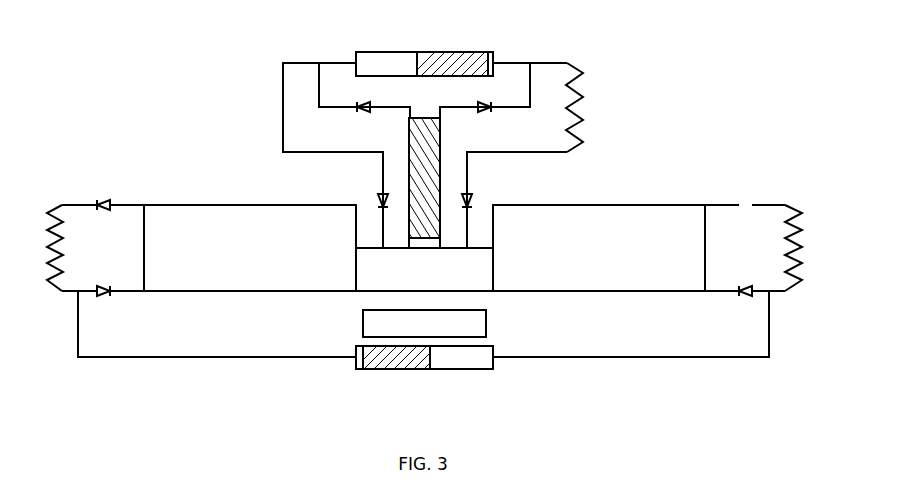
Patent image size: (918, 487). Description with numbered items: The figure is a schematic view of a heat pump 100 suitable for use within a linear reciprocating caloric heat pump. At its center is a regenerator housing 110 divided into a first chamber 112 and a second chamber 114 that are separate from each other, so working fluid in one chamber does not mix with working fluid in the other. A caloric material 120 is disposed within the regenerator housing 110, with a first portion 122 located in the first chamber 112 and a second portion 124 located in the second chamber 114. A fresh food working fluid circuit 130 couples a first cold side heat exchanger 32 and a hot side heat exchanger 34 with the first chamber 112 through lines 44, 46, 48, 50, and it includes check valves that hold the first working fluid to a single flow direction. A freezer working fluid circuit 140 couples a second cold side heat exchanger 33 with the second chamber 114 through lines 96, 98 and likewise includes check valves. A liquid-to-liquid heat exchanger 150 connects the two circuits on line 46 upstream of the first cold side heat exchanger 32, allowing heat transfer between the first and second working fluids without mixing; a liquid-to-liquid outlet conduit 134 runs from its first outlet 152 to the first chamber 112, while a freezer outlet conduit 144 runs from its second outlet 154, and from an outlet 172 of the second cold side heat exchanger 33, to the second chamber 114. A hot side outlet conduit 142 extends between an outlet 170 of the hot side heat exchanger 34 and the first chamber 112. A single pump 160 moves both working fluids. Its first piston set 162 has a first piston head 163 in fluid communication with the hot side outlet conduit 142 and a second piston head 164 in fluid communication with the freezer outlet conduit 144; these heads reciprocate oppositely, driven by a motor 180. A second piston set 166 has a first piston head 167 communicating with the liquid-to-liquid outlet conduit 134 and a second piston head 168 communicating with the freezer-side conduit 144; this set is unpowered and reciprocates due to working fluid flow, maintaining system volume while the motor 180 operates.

The heat pump 100 is at (119, 65).
The freezer working fluid circuit 140 is at (274, 118).
The freezer outlet conduit 144 is at (390, 107).
The liquid-to-liquid outlet conduit 134 is at (464, 108).
The hot side outlet conduit 142 is at (722, 290).
The liquid-to-liquid heat exchanger 150 is at (419, 135).
The first outlet 152 is at (450, 118).
The second outlet 154 is at (400, 118).
The second piston head 168 is at (412, 62).
The second piston set 166 is at (445, 52).
The first piston head 167 is at (490, 56).
The line 46 is at (558, 62).
The first cold side heat exchanger 32 is at (583, 103).
The line 44 is at (556, 152).
The fresh food working fluid circuit 130 is at (505, 164).
The regenerator housing 110 is at (163, 295).
The second chamber 114 is at (188, 197).
The second portion 124 is at (233, 268).
The caloric material 120 is at (500, 272).
The first portion 122 is at (598, 268).
The first chamber 112 is at (632, 196).
The line 96 is at (77, 203).
The second cold side heat exchanger 33 is at (52, 212).
The outlet 172 is at (56, 299).
The line 98 is at (85, 292).
The line 48 is at (722, 205).
The hot side heat exchanger 34 is at (800, 257).
The line 50 is at (759, 295).
The outlet 170 is at (789, 303).
The motor 180 is at (362, 326).
The pump 160 is at (508, 383).
The second piston head 164 is at (358, 362).
The first piston set 162 is at (432, 355).
The first piston head 163 is at (435, 357).